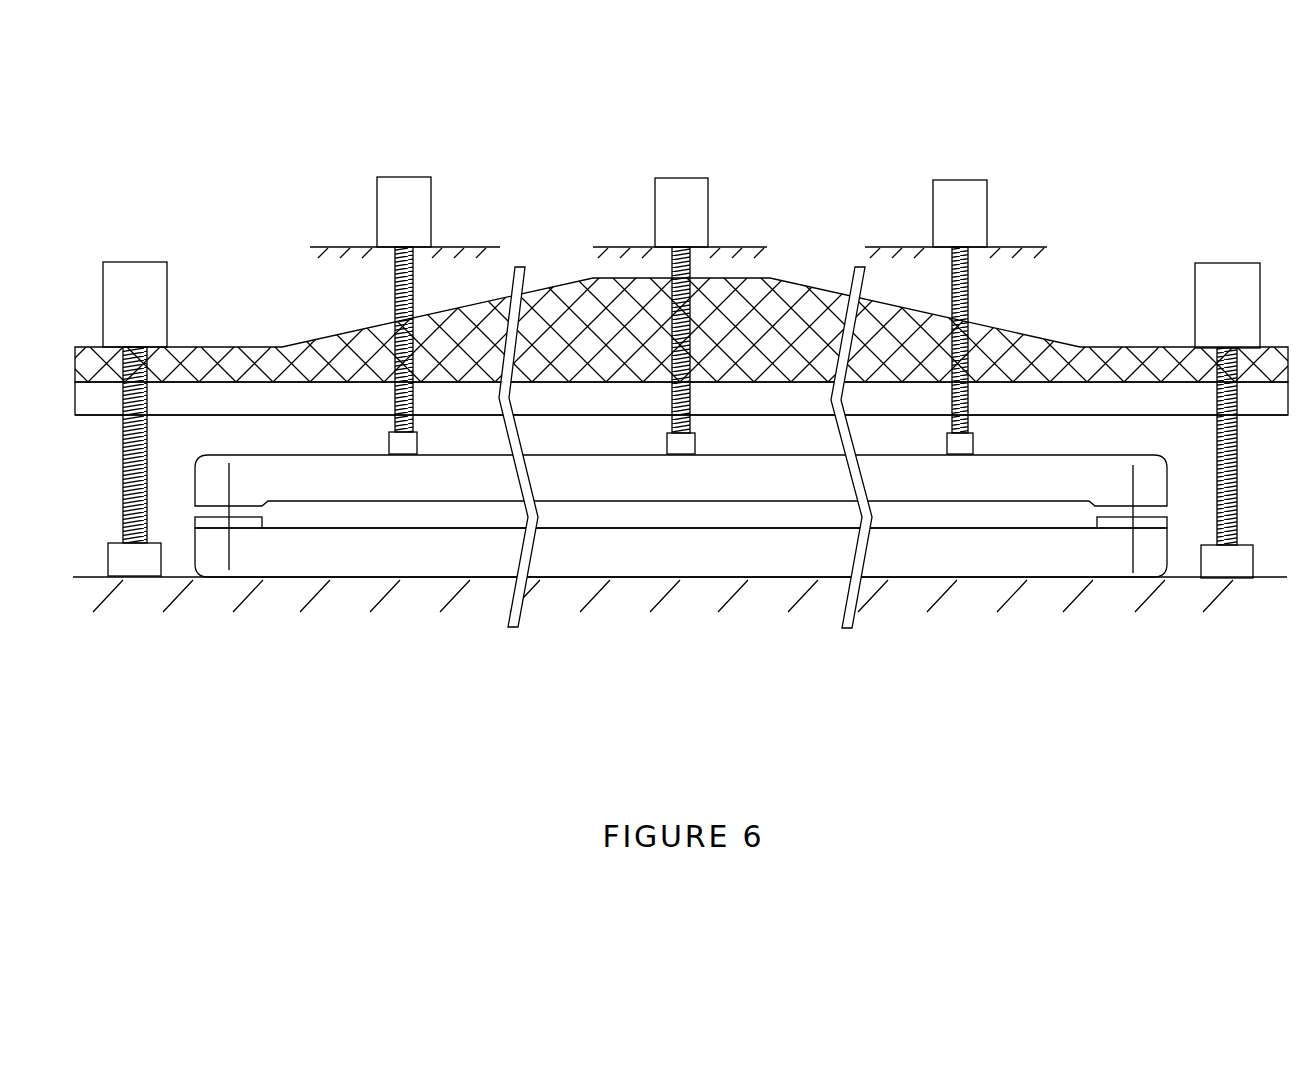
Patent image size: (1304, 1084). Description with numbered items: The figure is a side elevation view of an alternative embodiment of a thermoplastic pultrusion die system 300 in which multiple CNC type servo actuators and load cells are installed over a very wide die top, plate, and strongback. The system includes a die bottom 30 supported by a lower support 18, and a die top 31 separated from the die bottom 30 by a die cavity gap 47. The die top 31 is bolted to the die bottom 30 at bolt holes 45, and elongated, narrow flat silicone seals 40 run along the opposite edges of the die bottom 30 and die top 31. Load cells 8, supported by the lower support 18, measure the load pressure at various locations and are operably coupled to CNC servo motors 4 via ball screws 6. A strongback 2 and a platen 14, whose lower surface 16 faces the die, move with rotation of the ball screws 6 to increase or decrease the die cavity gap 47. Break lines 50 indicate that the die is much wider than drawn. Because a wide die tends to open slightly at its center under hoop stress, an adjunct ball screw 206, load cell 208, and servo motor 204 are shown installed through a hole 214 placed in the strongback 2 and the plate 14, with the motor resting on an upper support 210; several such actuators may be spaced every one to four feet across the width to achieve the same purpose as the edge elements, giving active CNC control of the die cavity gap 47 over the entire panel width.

The strongback 2 is at (803, 313).
The CNC servo motor 4 is at (132, 260).
The ball screw 6 is at (148, 497).
The load cell 8 is at (140, 568).
The platen 14 is at (681, 400).
The bottom surface of plate 16 is at (252, 418).
The lower support 18 is at (680, 595).
The die bottom 30 is at (415, 553).
The die top 31 is at (780, 477).
The flat silicone seal 40 is at (243, 527).
The bolt hole 45 is at (228, 481).
The die cavity gap 47 is at (923, 515).
The break line 50 is at (521, 635).
The servo motor 204 is at (418, 183).
The adjunct ball screw 206 is at (396, 309).
The load cell 208 is at (696, 440).
The upper support 210 is at (488, 252).
The hole 214 is at (661, 286).
The thermoplastic pultrusion die system 300 is at (679, 628).